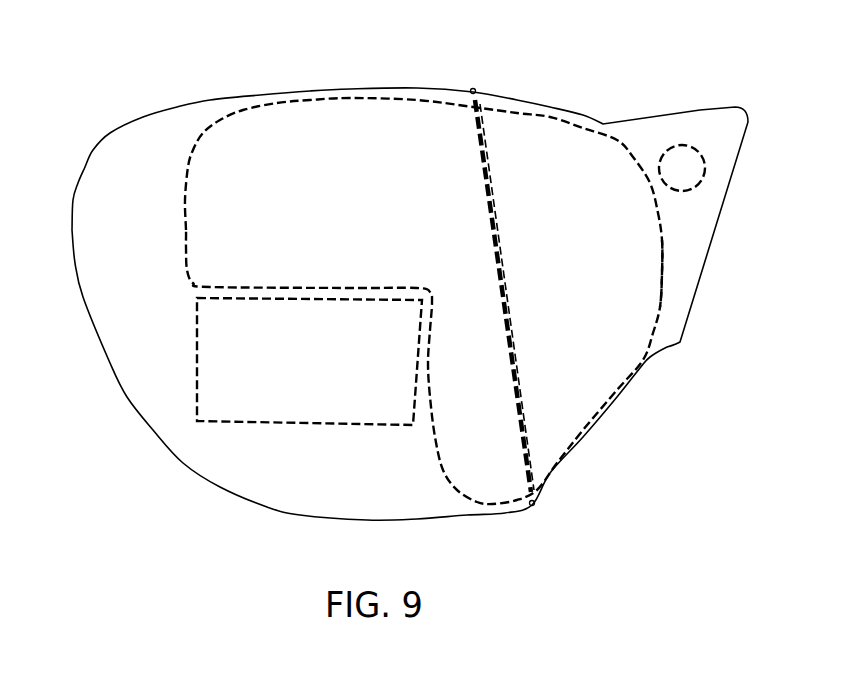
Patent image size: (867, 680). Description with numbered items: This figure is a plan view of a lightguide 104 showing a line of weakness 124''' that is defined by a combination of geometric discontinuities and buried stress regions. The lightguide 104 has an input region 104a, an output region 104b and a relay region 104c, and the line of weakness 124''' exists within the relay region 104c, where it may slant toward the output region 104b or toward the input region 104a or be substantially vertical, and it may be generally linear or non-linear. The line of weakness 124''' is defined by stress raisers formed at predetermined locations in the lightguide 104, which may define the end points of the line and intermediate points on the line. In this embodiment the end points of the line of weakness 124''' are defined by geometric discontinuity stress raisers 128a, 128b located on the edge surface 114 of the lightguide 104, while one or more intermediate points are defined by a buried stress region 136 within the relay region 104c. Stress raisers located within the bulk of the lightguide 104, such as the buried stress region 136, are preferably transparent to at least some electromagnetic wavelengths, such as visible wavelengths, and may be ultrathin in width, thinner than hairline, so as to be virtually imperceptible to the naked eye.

The lightguide 104 is at (240, 81).
The input region 104a is at (681, 165).
The output region 104b is at (277, 371).
The relay region 104c is at (533, 266).
The edge surface 114 is at (327, 90).
The line of weakness 124''' is at (470, 268).
The geometric discontinuity stress raiser 128a is at (474, 89).
The geometric discontinuity stress raiser 128b is at (531, 506).
The buried stress region 136 is at (494, 230).